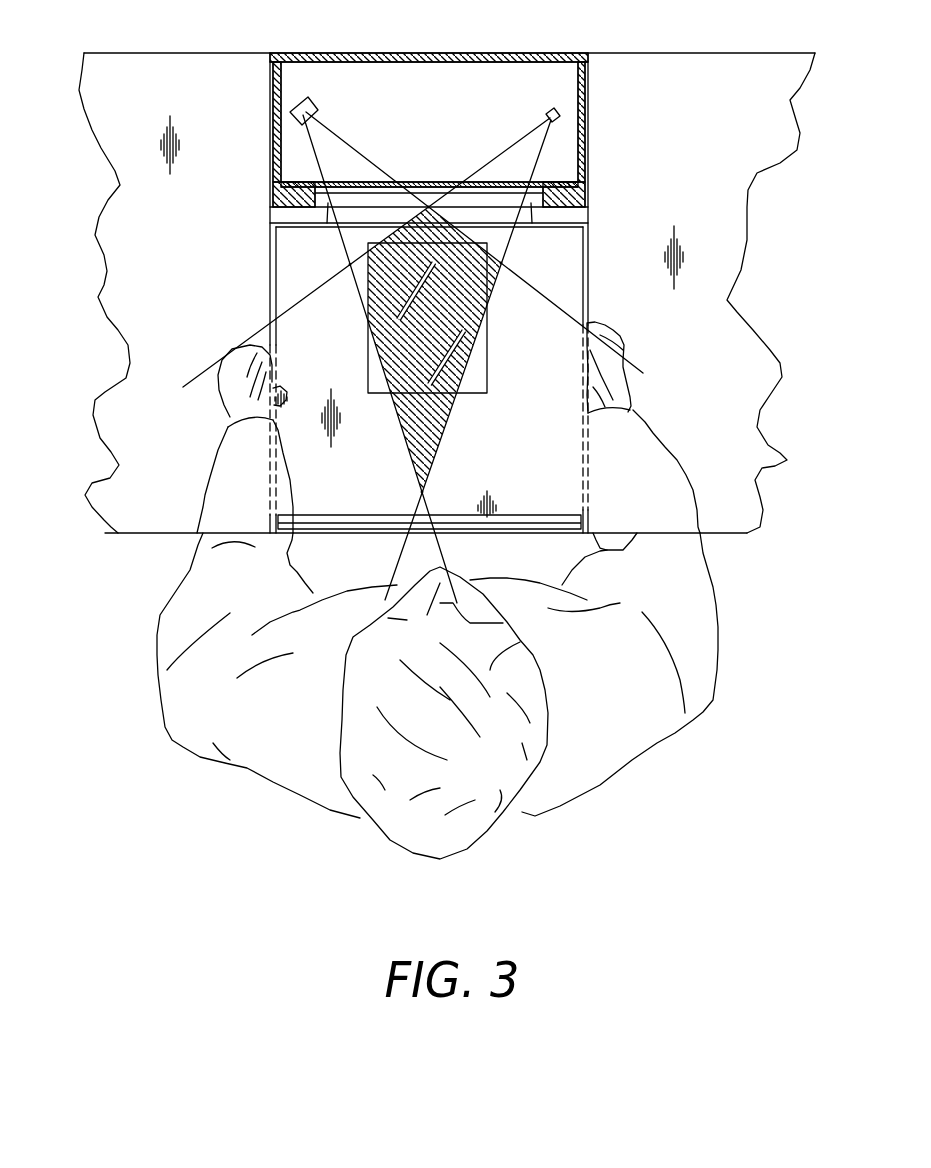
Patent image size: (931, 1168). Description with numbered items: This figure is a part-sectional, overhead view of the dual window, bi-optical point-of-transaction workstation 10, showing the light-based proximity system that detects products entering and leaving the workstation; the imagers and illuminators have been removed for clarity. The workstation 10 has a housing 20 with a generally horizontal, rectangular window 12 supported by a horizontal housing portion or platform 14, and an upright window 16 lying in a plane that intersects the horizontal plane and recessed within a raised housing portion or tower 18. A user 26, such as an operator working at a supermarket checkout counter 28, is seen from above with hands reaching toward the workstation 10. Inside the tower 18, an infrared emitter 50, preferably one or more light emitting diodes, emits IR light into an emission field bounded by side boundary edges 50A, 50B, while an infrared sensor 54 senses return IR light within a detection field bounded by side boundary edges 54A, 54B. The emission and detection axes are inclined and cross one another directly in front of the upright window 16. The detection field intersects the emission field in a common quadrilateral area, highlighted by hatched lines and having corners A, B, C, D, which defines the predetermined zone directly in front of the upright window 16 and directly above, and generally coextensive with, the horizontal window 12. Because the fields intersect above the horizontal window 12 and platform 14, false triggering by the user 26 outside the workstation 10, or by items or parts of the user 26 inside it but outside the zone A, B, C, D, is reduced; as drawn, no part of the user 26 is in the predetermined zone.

The point-of-transaction workstation 10 is at (636, 58).
The horizontal window 12 is at (368, 364).
The platform 14 is at (577, 233).
The upright window 16 is at (427, 183).
The tower 18 is at (585, 92).
The housing 20 is at (269, 48).
The user 26 is at (266, 778).
The checkout counter 28 is at (733, 70).
The infrared emitter 50 is at (553, 108).
The side boundary edge of IR emission field 50A is at (297, 303).
The side boundary edge of IR emission field 50B is at (507, 248).
The infrared sensor 54 is at (315, 98).
The side boundary edge of IR detection field 54A is at (345, 141).
The side boundary edge of IR detection field 54B is at (317, 157).
The corner of predetermined zone A is at (440, 200).
The corner of predetermined zone B is at (428, 493).
The corner of predetermined zone C is at (508, 270).
The corner of predetermined zone D is at (350, 266).